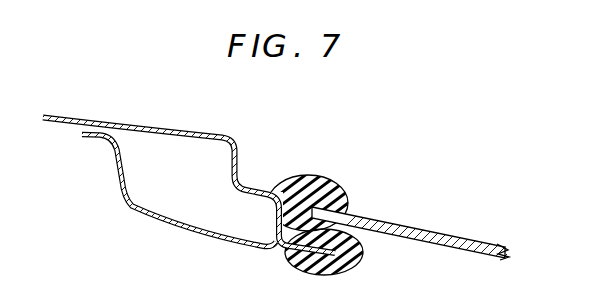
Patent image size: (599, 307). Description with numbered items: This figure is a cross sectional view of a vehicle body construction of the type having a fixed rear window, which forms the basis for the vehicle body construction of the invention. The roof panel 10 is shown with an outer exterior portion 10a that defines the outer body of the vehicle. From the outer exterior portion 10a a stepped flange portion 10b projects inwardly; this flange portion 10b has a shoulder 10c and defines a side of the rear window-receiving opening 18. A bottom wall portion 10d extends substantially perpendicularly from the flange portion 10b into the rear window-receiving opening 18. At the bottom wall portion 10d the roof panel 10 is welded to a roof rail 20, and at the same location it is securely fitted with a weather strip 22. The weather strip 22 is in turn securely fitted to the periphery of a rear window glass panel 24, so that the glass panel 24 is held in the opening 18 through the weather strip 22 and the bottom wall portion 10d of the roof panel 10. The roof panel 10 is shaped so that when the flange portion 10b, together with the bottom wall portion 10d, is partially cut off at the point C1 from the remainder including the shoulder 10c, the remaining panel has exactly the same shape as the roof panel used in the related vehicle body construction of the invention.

The roof panel 10 is at (150, 124).
The outer exterior portion 10a is at (207, 132).
The stepped flange portion 10b is at (240, 165).
The shoulder 10c is at (262, 191).
The bottom wall portion 10d is at (360, 243).
The roof rail 20 is at (135, 205).
The weather strip 22 is at (318, 196).
The rear window glass panel 24 is at (460, 243).
The rear window-receiving opening 18 is at (467, 292).
The cutting point C1 is at (270, 204).